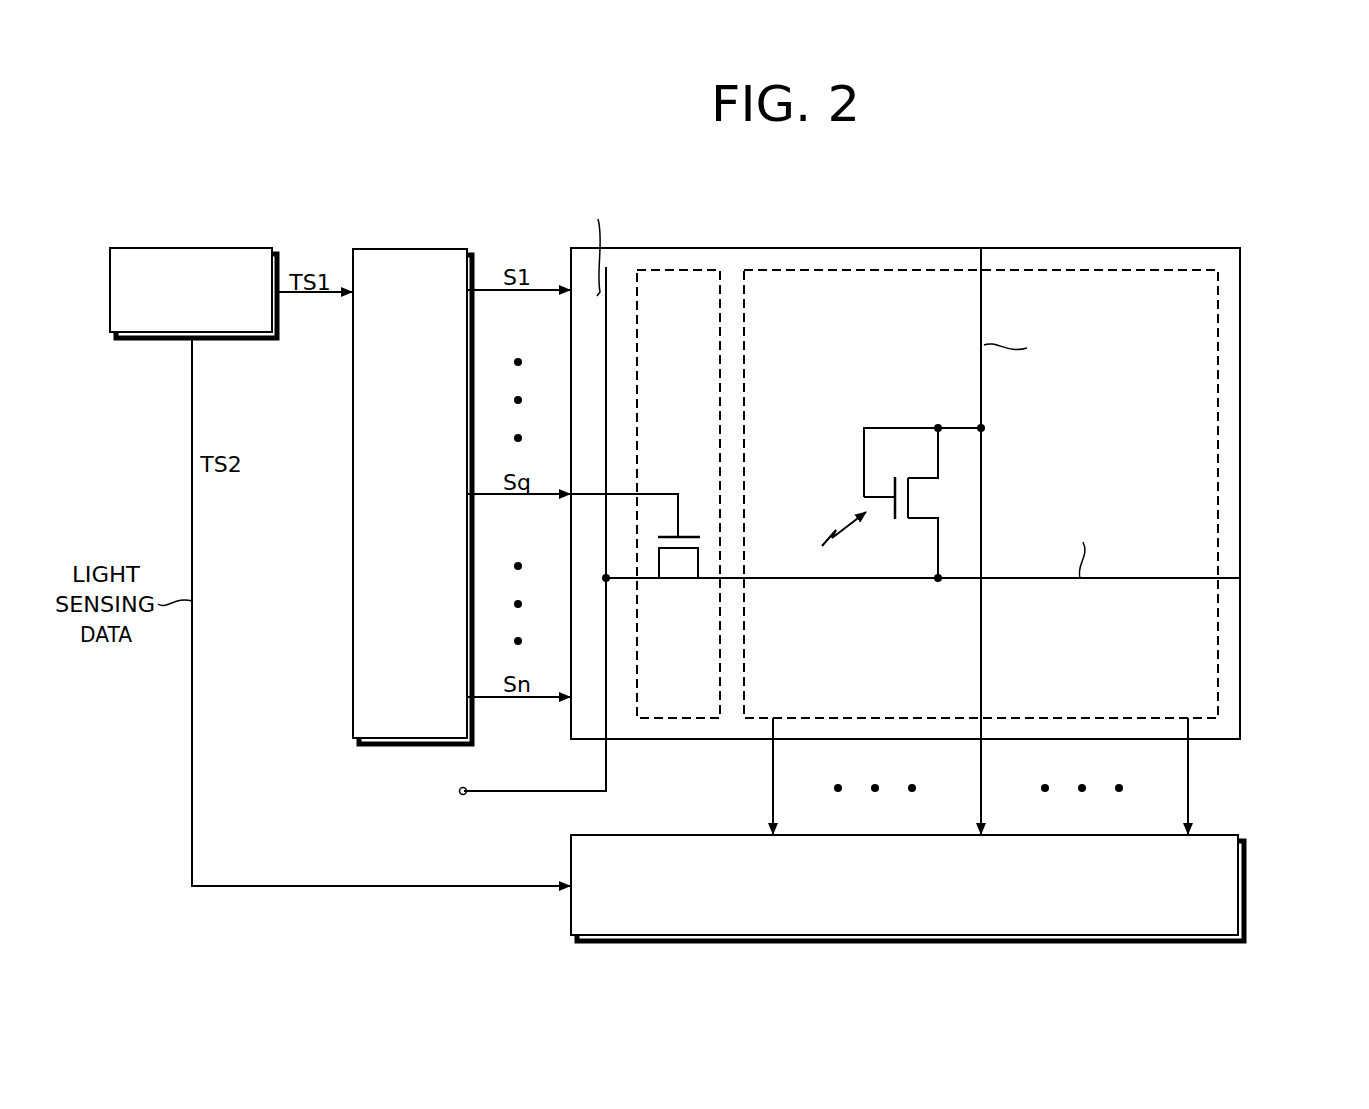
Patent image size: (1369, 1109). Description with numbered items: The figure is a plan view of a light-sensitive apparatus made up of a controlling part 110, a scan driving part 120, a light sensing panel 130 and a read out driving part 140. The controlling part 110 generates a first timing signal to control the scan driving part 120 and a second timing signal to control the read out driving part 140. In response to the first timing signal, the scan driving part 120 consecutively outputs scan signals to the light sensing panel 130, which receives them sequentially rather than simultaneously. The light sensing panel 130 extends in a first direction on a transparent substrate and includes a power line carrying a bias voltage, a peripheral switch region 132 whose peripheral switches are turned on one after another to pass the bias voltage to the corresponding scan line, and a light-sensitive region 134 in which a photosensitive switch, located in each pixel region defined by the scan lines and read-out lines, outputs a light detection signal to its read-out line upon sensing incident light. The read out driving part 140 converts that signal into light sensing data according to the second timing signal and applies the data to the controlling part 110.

The controlling part 110 is at (207, 248).
The scan driving part 120 is at (415, 249).
The light sensing panel 130 is at (825, 505).
The peripheral switch region 132 is at (678, 270).
The light-sensitive region 134 is at (1028, 270).
The read out driving part 140 is at (1245, 890).